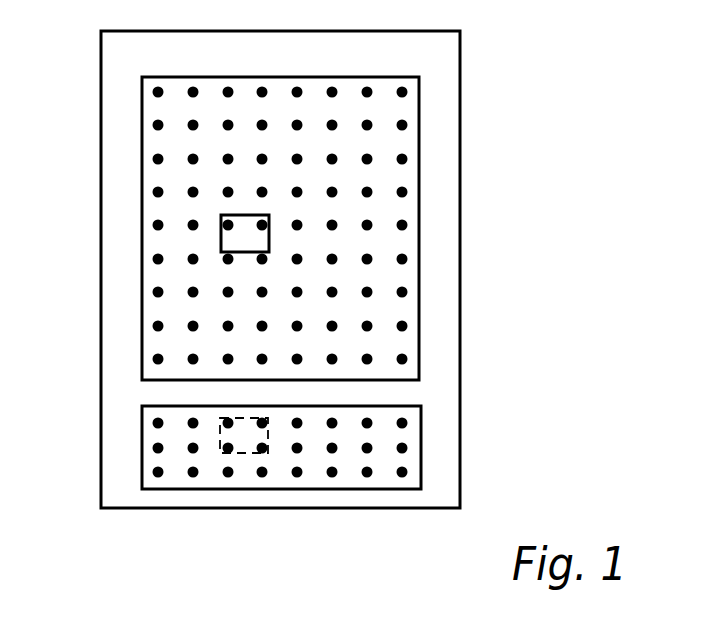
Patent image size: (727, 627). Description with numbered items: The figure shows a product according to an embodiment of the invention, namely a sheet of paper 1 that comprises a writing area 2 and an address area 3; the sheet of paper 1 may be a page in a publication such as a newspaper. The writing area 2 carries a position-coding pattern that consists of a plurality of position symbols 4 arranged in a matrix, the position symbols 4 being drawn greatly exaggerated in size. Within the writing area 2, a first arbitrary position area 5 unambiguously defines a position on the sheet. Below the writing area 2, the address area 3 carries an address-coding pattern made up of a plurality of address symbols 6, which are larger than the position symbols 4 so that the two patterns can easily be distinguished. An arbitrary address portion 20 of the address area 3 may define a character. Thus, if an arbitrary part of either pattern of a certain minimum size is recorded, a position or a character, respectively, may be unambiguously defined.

The sheet of paper 1 is at (461, 141).
The writing area 2 is at (419, 93).
The address area 3 is at (421, 440).
The position symbols 4 is at (404, 292).
The first arbitrary position area 5 is at (221, 232).
The address symbols 6 is at (367, 476).
The arbitrary address portion 20 is at (238, 452).